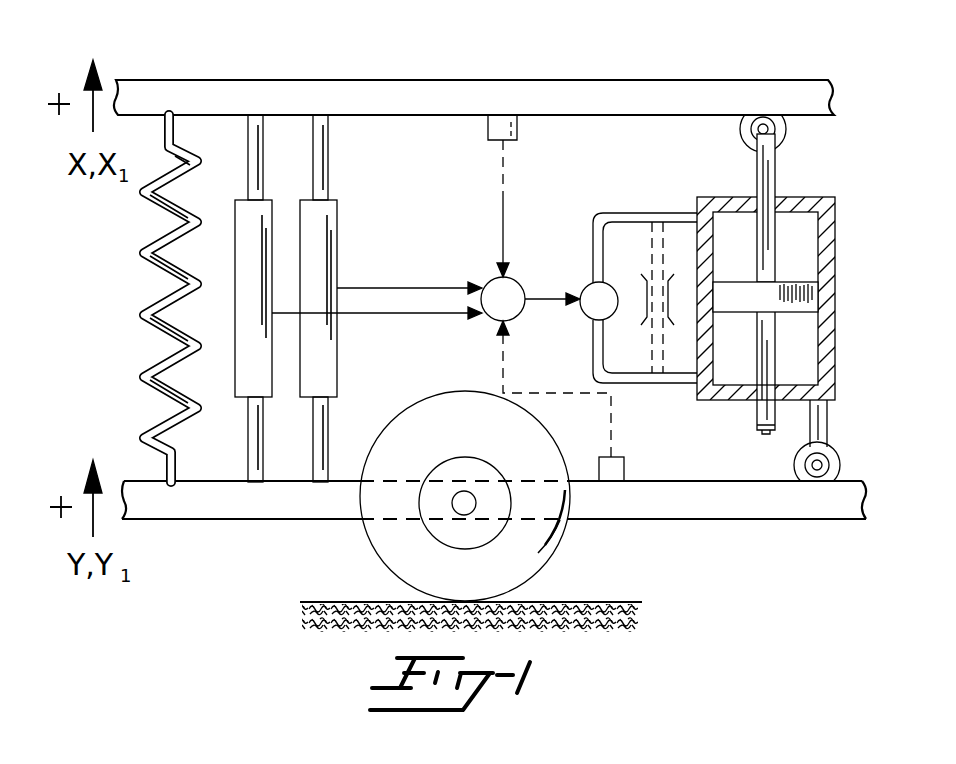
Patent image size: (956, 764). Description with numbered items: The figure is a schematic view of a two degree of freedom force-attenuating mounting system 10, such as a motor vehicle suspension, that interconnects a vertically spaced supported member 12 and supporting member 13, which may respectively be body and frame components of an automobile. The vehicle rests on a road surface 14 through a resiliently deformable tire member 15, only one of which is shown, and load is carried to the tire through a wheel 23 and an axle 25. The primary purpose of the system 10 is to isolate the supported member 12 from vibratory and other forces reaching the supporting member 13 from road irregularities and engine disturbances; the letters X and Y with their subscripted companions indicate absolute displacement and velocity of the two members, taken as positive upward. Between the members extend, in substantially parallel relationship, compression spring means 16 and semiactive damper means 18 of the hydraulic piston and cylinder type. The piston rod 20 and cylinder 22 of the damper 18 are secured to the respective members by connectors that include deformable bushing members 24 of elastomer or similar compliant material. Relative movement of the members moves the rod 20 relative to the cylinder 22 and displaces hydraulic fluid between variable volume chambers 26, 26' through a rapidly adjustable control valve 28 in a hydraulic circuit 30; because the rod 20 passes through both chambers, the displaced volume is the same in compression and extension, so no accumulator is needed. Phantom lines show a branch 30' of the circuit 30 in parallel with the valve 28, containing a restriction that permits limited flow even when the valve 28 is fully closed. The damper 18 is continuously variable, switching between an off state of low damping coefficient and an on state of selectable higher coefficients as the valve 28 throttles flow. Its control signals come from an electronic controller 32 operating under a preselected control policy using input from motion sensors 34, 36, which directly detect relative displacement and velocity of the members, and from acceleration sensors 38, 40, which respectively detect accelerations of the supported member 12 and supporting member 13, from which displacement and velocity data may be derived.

The force-attenuating mounting system 10 is at (552, 28).
The supported member 12 is at (420, 90).
The supporting member 13 is at (199, 507).
The road surface 14 is at (590, 602).
The tire member 15 is at (403, 558).
The compression spring means 16 is at (143, 255).
The semiactive damper means 18 is at (913, 222).
The piston rod 20 is at (777, 180).
The cylinder 22 is at (737, 393).
The wheel 23 is at (533, 443).
The deformable bushing members 24 is at (769, 132).
The axle 25 is at (470, 506).
The variable volume chamber 26 is at (803, 247).
The variable volume chamber 26' is at (806, 348).
The control valve 28 is at (587, 291).
The hydraulic circuit 30 is at (645, 280).
The branch of the circuit 30' is at (643, 297).
The electronic controller 32 is at (493, 312).
The motion sensor 34 is at (242, 382).
The motion sensor 36 is at (317, 388).
The acceleration sensor 38 is at (510, 141).
The acceleration sensor 40 is at (624, 468).